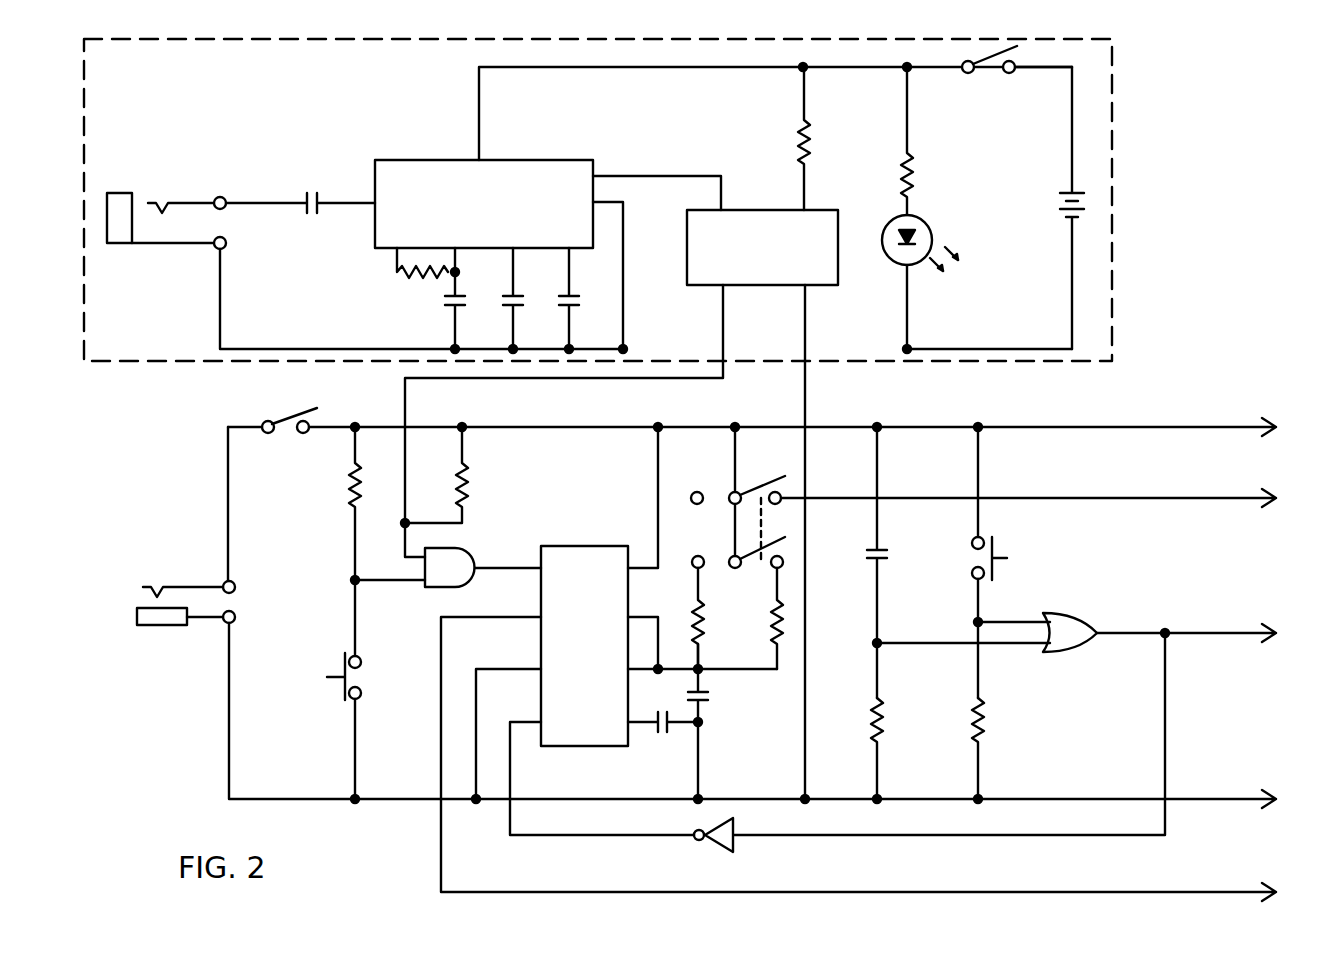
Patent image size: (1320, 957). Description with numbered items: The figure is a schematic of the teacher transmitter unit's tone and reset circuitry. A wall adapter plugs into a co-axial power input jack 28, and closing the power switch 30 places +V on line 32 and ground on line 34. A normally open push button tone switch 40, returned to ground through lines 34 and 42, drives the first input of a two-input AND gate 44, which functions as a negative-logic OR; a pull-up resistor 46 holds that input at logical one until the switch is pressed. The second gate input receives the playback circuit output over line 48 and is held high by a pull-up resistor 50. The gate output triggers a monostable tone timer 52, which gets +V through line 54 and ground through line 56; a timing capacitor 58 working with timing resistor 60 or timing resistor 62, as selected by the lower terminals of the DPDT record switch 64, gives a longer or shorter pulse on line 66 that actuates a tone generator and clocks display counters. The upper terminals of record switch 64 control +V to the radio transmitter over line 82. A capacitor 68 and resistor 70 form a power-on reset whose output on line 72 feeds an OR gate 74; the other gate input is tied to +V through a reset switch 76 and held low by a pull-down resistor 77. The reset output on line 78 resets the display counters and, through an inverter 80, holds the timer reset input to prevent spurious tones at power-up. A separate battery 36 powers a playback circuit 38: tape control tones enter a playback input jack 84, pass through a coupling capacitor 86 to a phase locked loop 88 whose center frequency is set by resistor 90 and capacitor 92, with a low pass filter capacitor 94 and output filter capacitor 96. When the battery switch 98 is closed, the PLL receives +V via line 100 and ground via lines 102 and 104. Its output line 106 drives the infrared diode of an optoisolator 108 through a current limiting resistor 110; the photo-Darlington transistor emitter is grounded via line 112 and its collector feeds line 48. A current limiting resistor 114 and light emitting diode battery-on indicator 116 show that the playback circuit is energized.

The co-axial power input jack 28 is at (172, 640).
The power switch 30 is at (290, 406).
The +V line 32 is at (552, 424).
The ground line 34 is at (228, 756).
The 9 V transistor battery 36 is at (1058, 198).
The playback circuit 38 is at (1112, 285).
The tone switch 40 is at (344, 663).
The line 42 is at (354, 756).
The 2-input AND gate 44 is at (436, 588).
The pull-up resistor 46 is at (350, 482).
The line 48 is at (720, 328).
The pull-up resistor 50 is at (468, 478).
The tone timer 52 is at (588, 540).
The line 54 is at (656, 484).
The line 56 is at (508, 668).
The timing capacitor 58 is at (704, 702).
The timing resistor 60 is at (776, 614).
The timing resistor 62 is at (700, 614).
The record switch 64 is at (720, 468).
The line 66 is at (440, 756).
The capacitor 68 is at (884, 548).
The resistor 70 is at (884, 712).
The line 72 is at (942, 642).
The 2-input OR gate 74 is at (1060, 654).
The reset switch 76 is at (996, 550).
The pull-down resistor 77 is at (985, 712).
The reset line 78 is at (1248, 629).
The inverter 80 is at (700, 840).
The line 82 is at (1244, 494).
The playback input jack 84 is at (176, 264).
The capacitor 86 is at (302, 198).
The phase locked loop 88 is at (424, 158).
The resistor 90 is at (432, 280).
The capacitor 92 is at (454, 310).
The low pass filter capacitor 94 is at (512, 310).
The output filter capacitor 96 is at (568, 310).
The battery switch 98 is at (992, 74).
The +V line 100 is at (662, 67).
The ground line 102 is at (1014, 345).
The line 104 is at (628, 203).
The PLL output line 106 is at (676, 172).
The photo-Darlington optoisolator 108 is at (815, 285).
The current limiting resistor 110 is at (798, 138).
The line 112 is at (802, 402).
The current limiting resistor 114 is at (900, 174).
The battery-on indicator 116 is at (928, 222).